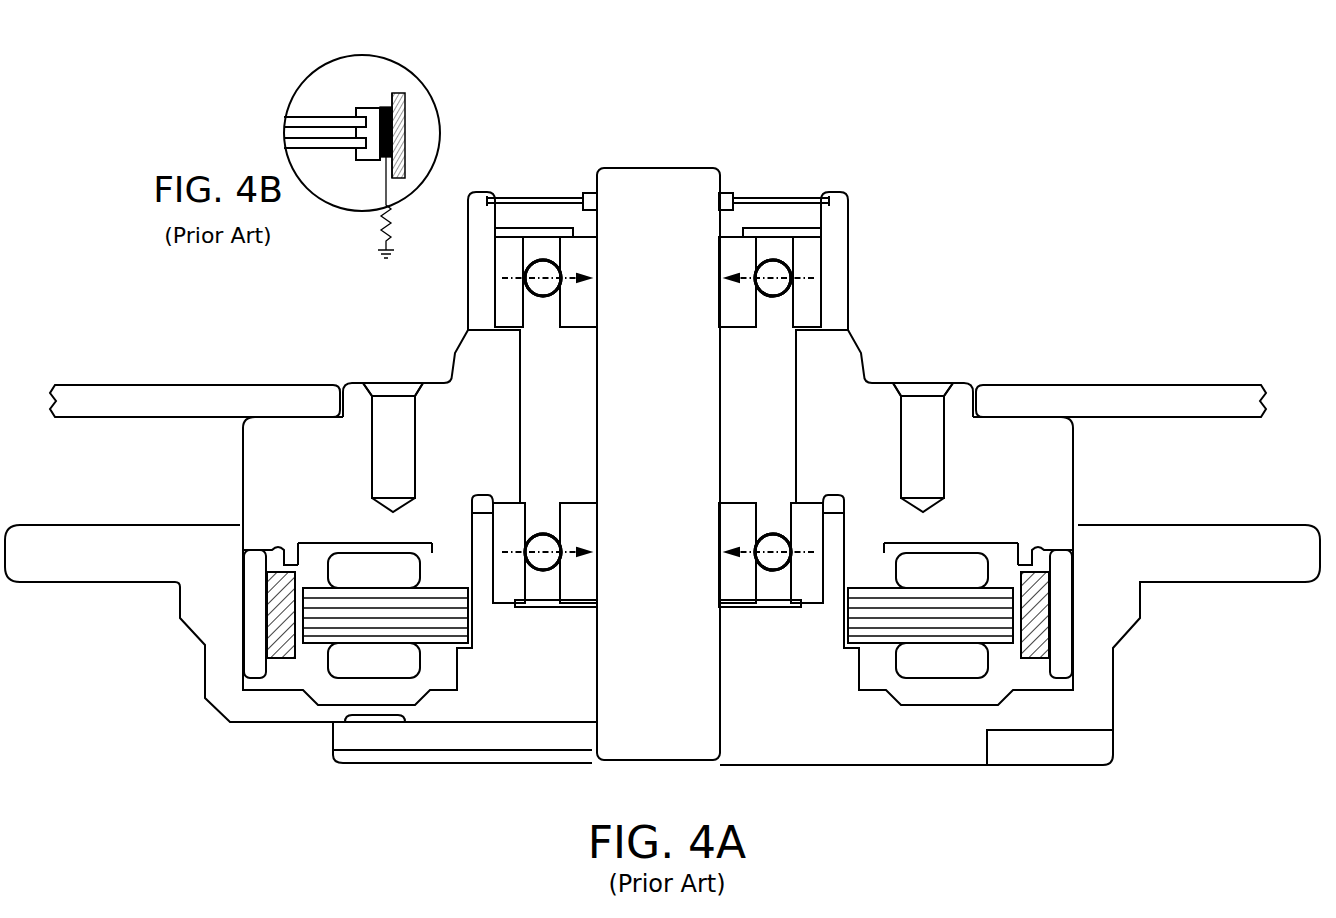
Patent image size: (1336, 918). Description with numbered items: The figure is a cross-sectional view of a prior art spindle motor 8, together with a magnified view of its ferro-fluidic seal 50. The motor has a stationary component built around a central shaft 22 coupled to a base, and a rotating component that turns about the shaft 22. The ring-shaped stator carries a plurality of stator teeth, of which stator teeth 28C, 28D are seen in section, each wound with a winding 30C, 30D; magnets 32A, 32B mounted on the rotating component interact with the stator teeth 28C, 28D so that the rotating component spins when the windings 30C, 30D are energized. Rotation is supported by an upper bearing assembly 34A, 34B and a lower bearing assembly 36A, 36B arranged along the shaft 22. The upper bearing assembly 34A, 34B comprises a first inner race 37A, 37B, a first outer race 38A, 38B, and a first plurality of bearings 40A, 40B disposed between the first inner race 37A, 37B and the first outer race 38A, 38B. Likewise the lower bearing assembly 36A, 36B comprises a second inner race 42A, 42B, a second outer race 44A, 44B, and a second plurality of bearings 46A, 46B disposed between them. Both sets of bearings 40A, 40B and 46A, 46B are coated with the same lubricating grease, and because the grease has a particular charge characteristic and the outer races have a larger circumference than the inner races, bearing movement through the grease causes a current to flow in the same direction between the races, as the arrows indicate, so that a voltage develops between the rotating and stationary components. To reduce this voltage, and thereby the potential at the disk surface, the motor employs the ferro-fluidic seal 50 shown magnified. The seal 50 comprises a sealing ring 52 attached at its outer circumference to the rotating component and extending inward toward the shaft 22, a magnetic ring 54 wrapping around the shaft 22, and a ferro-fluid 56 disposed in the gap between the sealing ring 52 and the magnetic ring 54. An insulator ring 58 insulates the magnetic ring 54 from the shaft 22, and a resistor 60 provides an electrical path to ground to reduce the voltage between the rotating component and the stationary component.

In FIG. 4A, the drive system 8 is at (982, 244).
In FIG. 4A, the shaft 22 is at (658, 464).
In FIG. 4B, the shaft 22 is at (590, 186).
In FIG. 4A, the stator tooth 28C is at (440, 625).
In FIG. 4A, the stator tooth 28D is at (875, 628).
In FIG. 4A, the winding 30C is at (345, 568).
In FIG. 4A, the winding 30D is at (975, 567).
In FIG. 4A, the magnet 32A is at (275, 638).
In FIG. 4A, the magnet 32B is at (1045, 637).
In FIG. 4A, the upper bearing assembly 34A is at (556, 328).
In FIG. 4A, the upper bearing assembly 34B is at (756, 333).
In FIG. 4A, the lower bearing assembly 36A is at (547, 495).
In FIG. 4A, the lower bearing assembly 36B is at (765, 488).
In FIG. 4A, the first inner race 37A is at (590, 318).
In FIG. 4A, the first inner race 37B is at (730, 262).
In FIG. 4A, the first outer race 38A is at (500, 315).
In FIG. 4A, the first outer race 38B is at (818, 320).
In FIG. 4A, the first plurality of bearings 40A is at (538, 268).
In FIG. 4A, the first plurality of bearings 40B is at (783, 268).
In FIG. 4A, the second inner race 42A is at (588, 574).
In FIG. 4A, the second inner race 42B is at (730, 520).
In FIG. 4A, the second outer race 44A is at (510, 520).
In FIG. 4A, the second outer race 44B is at (805, 520).
In FIG. 4A, the second plurality of bearings 46A is at (548, 562).
In FIG. 4A, the second plurality of bearings 46B is at (770, 562).
In FIG. 4B, the ferro-fluidic seal 50 is at (432, 80).
In FIG. 4B, the sealing ring 52 is at (315, 120).
In FIG. 4B, the magnetic ring 54 is at (385, 105).
In FIG. 4B, the ferro-fluid 56 is at (365, 150).
In FIG. 4B, the insulator ring 58 is at (400, 95).
In FIG. 4B, the resistor 60 is at (375, 244).